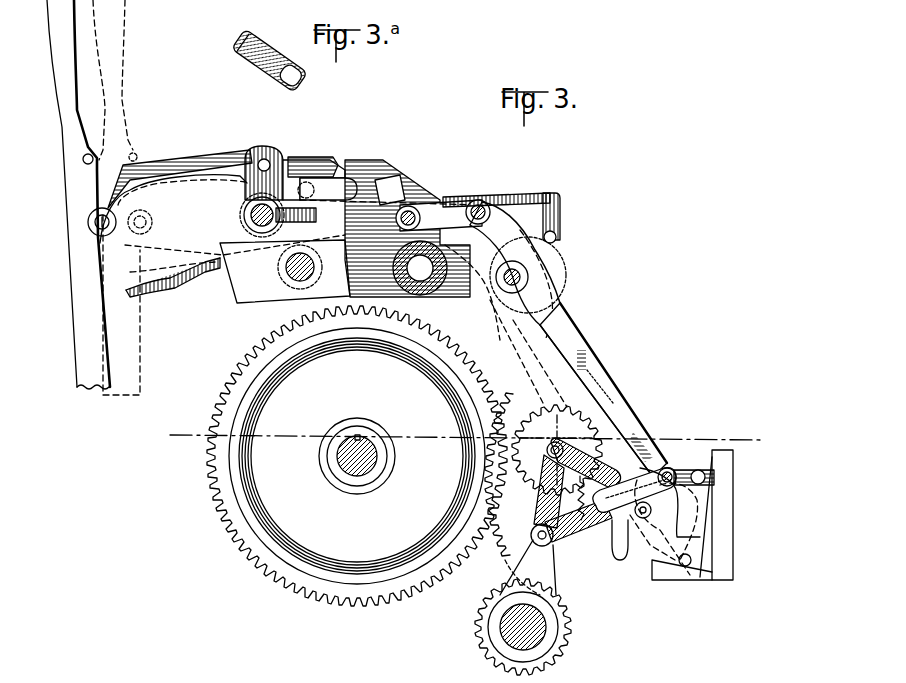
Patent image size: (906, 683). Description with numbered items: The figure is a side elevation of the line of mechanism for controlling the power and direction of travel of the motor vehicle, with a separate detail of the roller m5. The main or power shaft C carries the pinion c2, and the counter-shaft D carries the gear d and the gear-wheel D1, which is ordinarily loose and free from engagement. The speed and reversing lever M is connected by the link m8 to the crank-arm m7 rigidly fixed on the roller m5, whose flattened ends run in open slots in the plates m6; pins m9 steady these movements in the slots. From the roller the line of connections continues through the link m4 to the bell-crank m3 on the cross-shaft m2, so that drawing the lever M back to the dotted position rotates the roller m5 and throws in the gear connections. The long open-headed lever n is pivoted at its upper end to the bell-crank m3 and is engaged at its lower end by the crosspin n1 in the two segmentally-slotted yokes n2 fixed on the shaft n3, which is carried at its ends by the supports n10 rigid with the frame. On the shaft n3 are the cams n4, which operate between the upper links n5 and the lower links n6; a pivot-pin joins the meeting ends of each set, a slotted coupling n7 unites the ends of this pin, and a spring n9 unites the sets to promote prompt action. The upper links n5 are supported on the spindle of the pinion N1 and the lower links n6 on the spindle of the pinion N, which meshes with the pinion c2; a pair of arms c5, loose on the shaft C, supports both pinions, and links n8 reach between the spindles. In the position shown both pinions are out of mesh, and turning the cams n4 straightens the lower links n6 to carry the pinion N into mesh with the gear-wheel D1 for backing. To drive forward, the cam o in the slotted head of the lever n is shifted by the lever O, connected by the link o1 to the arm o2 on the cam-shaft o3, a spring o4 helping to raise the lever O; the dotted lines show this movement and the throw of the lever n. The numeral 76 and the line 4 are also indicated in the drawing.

In FIG. 3, the lever M is at (52, 63).
In FIG. 3A, the roller m5 is at (254, 62).
In FIG. 3, the roller m5 is at (243, 215).
In FIG. 3, the link m8 is at (194, 166).
In FIG. 3, the pins m9 is at (262, 160).
In FIG. 3, the crank-arm m7 is at (290, 160).
In FIG. 3, the link m4 is at (361, 213).
In FIG. 3, the spring o4 is at (404, 188).
In FIG. 3, the bell-crank m3 is at (440, 208).
In FIG. 3, the lever O is at (523, 193).
In FIG. 3, the link o1 is at (561, 206).
In FIG. 3, the arm o2 is at (563, 240).
In FIG. 3, the cam o is at (548, 271).
In FIG. 3, the cam-shaft o3 is at (530, 283).
In FIG. 3, the long open-headed lever n is at (583, 337).
In FIG. 3, the cross-shaft m2 is at (432, 295).
In FIG. 3, the plates m6 is at (238, 305).
In FIG. 3, the pin 76 is at (293, 284).
In FIG. 3, the gear-wheel D1 is at (233, 524).
In FIG. 3, the counter-shaft D is at (364, 436).
In FIG. 3, the gear d is at (360, 600).
In FIG. 3, the section line 4 is at (454, 438).
In FIG. 3, the pinion N1 is at (531, 421).
In FIG. 3, the pinion N is at (520, 546).
In FIG. 3, the main or power shaft C is at (560, 628).
In FIG. 3, the pinion c2 is at (478, 622).
In FIG. 3, the arms c5 is at (528, 559).
In FIG. 3, the links n8 is at (552, 453).
In FIG. 3, the spring n9 is at (602, 480).
In FIG. 3, the lower links n6 is at (592, 532).
In FIG. 3, the slotted coupling n7 is at (620, 560).
In FIG. 3, the segmentally-slotted yokes n2 is at (652, 462).
In FIG. 3, the crosspin n1 is at (672, 470).
In FIG. 3, the upper links n5 is at (574, 438).
In FIG. 3, the cams n4 is at (680, 503).
In FIG. 3, the supports n10 is at (686, 536).
In FIG. 3, the shaft n3 is at (645, 519).